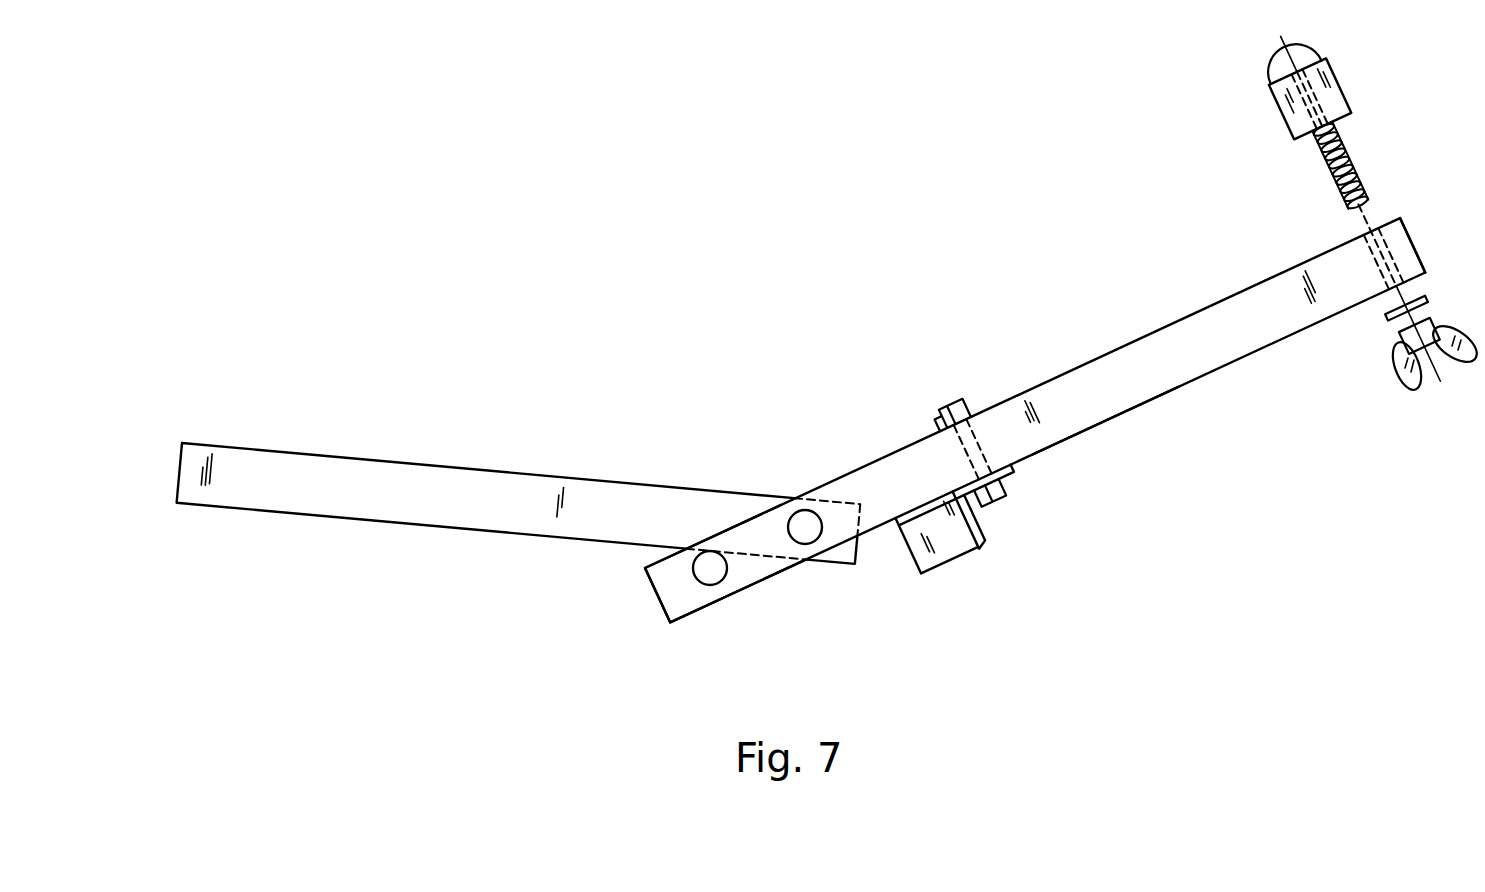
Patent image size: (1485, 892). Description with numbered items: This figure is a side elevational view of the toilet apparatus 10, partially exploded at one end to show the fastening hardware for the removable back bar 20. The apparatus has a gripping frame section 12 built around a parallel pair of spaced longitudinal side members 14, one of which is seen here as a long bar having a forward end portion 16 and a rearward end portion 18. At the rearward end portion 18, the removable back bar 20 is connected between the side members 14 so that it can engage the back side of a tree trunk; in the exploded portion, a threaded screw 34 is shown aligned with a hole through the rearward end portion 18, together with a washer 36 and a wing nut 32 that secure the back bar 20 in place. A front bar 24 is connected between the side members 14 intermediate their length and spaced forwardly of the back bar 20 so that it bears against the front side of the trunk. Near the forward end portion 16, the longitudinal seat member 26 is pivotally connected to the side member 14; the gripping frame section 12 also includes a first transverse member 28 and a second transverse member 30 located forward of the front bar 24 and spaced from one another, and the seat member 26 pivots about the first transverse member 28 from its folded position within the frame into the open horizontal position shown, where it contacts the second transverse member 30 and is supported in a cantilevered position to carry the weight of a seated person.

The toilet apparatus 10 is at (730, 429).
The gripping frame section 12 is at (1150, 322).
The longitudinal side member 14 is at (1122, 414).
The forward end portion 16 is at (657, 610).
The rearward end portion 18 is at (1410, 240).
The removable back bar 20 is at (1281, 110).
The front bar 24 is at (937, 541).
The longitudinal seat member 26 is at (443, 528).
The first transverse member 28 is at (805, 527).
The second transverse member 30 is at (710, 568).
The wing nut 32 is at (1395, 372).
The threaded screw 34 is at (1335, 179).
The washer 36 is at (1387, 318).